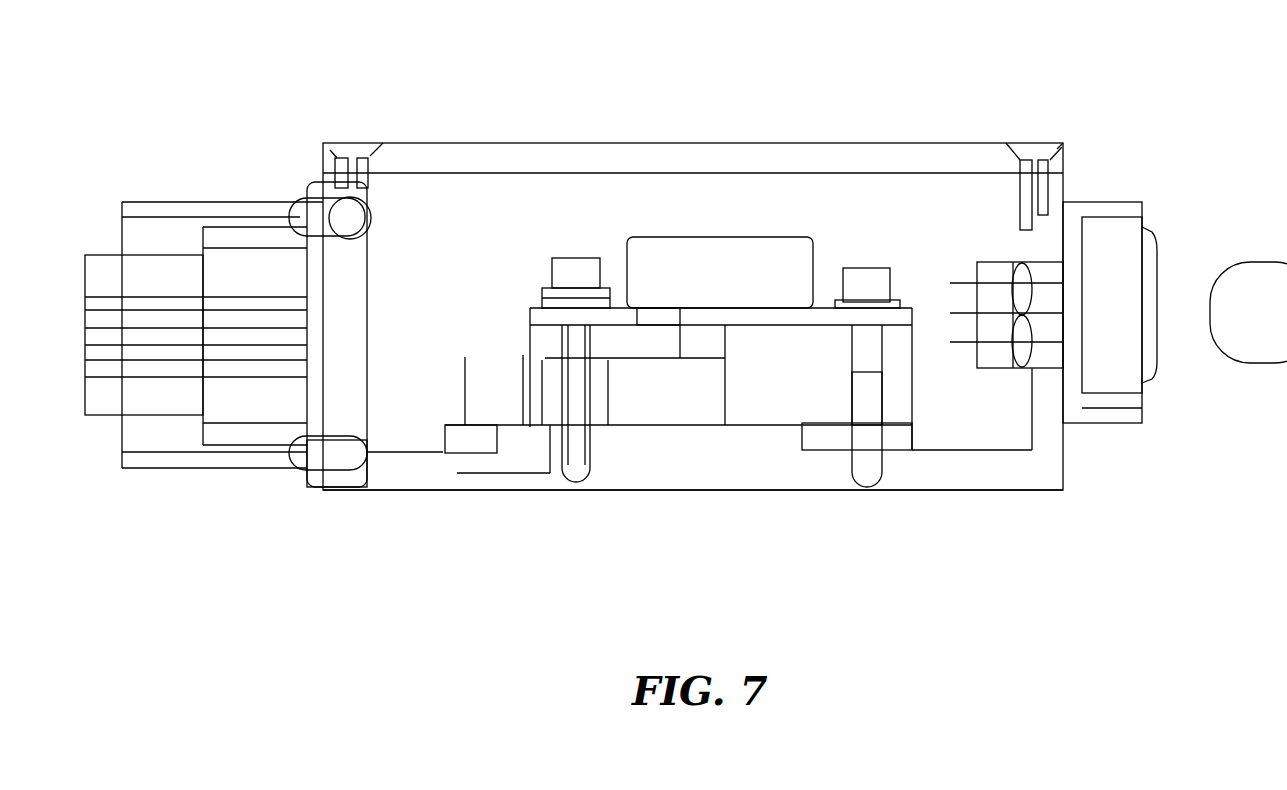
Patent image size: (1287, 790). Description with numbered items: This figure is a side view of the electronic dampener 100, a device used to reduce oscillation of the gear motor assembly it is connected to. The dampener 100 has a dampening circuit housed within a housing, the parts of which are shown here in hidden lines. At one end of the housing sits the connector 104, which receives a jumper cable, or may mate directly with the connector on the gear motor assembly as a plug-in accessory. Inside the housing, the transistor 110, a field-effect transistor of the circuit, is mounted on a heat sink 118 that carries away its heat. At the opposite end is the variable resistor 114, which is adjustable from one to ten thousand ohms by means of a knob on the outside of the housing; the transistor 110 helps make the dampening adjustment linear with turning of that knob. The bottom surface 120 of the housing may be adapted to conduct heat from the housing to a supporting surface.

The electronic dampener 100 is at (657, 142).
The connector 104 is at (263, 202).
The transistor 110 is at (747, 265).
The variable resistor 114 is at (1105, 260).
The heat sink 118 is at (803, 368).
The bottom surface 120 is at (418, 490).